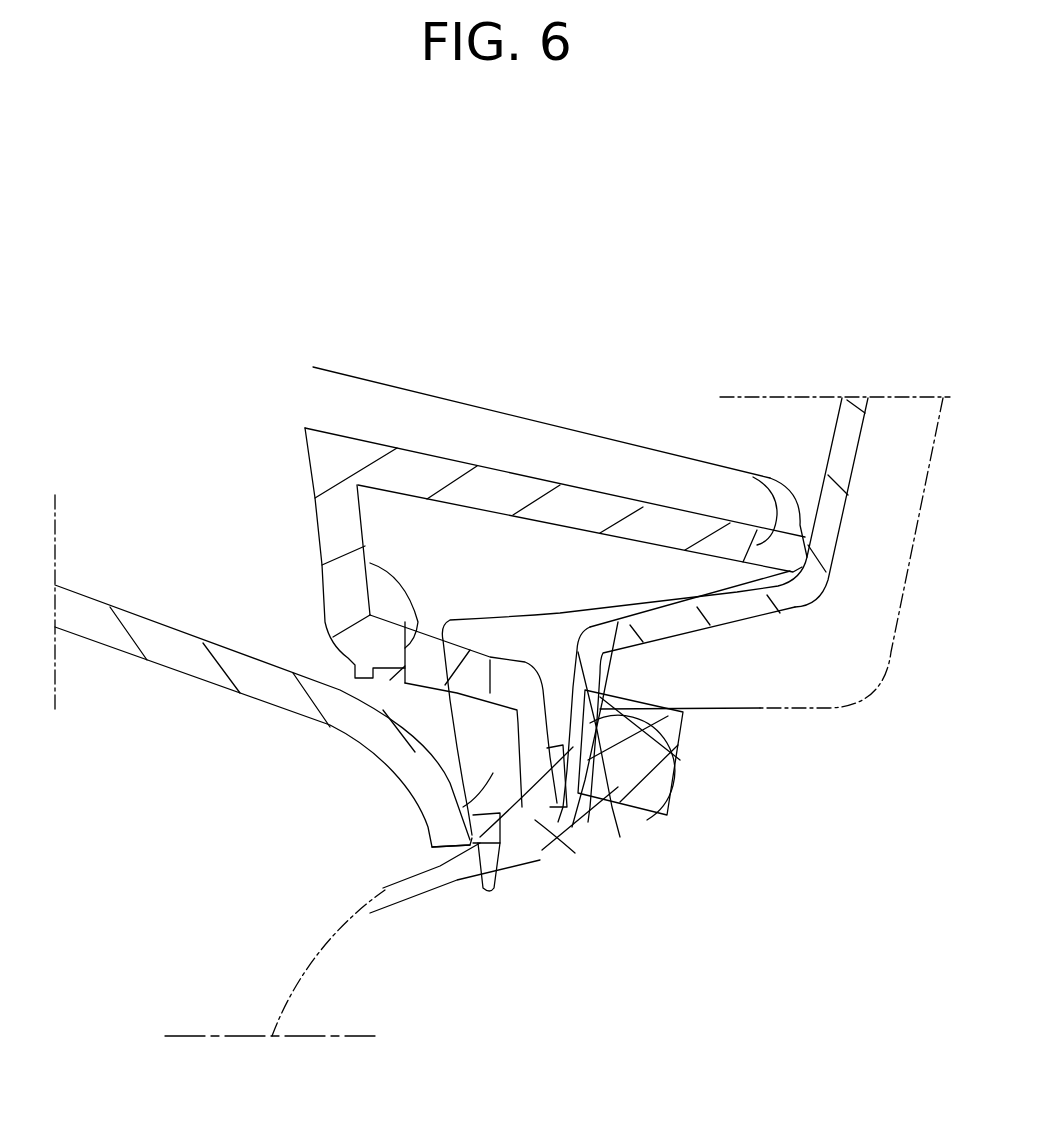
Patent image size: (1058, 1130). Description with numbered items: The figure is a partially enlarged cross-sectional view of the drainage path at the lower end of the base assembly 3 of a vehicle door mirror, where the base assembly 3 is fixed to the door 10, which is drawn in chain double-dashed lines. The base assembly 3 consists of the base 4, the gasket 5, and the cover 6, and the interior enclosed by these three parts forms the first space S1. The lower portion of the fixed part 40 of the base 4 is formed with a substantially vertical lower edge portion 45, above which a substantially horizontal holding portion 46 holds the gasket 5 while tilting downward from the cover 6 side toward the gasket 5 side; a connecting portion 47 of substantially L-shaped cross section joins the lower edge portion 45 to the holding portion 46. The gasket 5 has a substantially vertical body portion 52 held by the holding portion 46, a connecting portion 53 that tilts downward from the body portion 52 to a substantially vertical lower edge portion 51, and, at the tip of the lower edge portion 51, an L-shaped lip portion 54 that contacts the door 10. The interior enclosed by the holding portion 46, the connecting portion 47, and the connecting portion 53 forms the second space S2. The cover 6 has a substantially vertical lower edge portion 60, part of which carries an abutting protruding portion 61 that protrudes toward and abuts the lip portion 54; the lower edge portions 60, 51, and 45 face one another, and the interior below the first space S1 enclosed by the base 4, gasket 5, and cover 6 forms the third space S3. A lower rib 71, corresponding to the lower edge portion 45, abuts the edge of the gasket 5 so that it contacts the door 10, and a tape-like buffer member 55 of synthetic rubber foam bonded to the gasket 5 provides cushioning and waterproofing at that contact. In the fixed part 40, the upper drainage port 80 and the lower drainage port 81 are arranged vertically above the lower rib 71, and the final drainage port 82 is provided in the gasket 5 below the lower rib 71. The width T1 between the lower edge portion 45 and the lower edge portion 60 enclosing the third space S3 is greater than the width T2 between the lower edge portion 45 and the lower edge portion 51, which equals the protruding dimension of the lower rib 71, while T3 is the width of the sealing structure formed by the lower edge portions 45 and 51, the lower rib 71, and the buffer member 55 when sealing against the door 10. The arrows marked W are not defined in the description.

The base assembly 3 is at (226, 306).
The base 4 is at (509, 658).
The gasket 5 is at (688, 654).
The cover 6 is at (133, 659).
The door 10 is at (935, 412).
The fixed part 40 is at (310, 475).
The lower edge portion 45 is at (563, 853).
The holding portion 46 is at (598, 503).
The connecting portion 47 is at (322, 590).
The lower edge portion 51 is at (593, 780).
The body portion 52 is at (852, 475).
The connecting portion 53 is at (740, 623).
The lip portion 54 is at (491, 893).
The buffer member 55 is at (673, 773).
The lower edge portion 60 is at (430, 842).
The abutting protruding portion 61 is at (470, 887).
The lower rib 71 is at (673, 748).
The upper drainage port 80 is at (770, 478).
The lower drainage port 81 is at (370, 563).
The final drainage port 82 is at (500, 843).
The outer surface W is at (428, 393).
The first space S1 is at (540, 338).
The second space S2 is at (492, 574).
The third space S3 is at (502, 752).
The width T1 is at (620, 781).
The width T2 is at (507, 688).
The width T3 is at (572, 795).